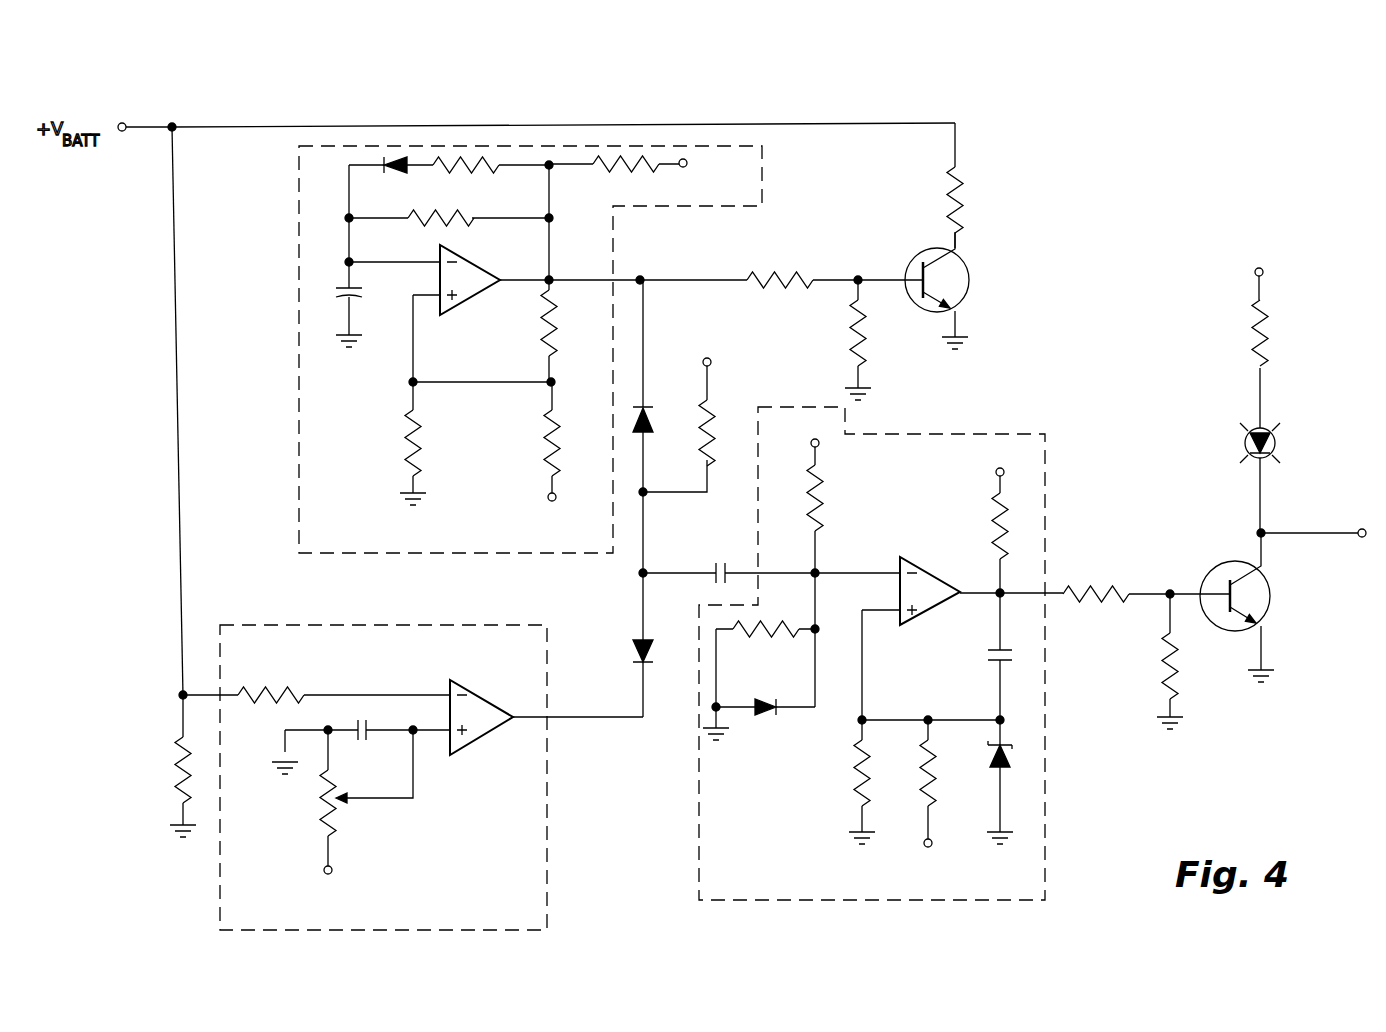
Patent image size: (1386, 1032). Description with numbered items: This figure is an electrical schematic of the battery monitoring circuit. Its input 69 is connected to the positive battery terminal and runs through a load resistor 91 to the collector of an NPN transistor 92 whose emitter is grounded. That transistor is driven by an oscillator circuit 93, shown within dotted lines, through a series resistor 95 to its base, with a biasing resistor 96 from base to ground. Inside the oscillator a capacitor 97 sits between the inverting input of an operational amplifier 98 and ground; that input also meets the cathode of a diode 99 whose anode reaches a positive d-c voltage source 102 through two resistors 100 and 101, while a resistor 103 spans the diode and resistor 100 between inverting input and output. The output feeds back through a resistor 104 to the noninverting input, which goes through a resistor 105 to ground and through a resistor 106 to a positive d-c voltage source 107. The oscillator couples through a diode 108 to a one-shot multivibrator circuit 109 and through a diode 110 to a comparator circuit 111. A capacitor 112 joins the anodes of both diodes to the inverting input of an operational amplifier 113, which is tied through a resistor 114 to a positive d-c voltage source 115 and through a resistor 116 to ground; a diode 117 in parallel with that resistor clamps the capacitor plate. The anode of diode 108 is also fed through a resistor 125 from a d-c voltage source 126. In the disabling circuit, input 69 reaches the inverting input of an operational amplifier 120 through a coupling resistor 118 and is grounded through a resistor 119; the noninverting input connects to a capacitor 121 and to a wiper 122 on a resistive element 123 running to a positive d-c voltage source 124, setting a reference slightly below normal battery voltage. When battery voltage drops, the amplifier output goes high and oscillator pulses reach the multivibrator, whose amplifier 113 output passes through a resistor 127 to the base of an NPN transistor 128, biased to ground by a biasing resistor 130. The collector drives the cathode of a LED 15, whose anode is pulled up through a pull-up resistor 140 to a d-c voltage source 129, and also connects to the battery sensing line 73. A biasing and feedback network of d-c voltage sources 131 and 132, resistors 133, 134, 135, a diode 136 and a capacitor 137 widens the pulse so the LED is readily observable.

The input 69 is at (125, 120).
The load resistor 91 is at (965, 200).
The NPN transistor 92 is at (965, 300).
The oscillator circuit 93 is at (762, 172).
The series resistor 95 is at (775, 272).
The biasing resistor 96 is at (865, 345).
The capacitor 97 is at (340, 283).
The operational amplifier 98 is at (470, 298).
The diode 99 is at (395, 172).
The resistor 100 is at (480, 172).
The resistor 101 is at (622, 178).
The positive d-c voltage source 102 is at (680, 168).
The resistor 103 is at (468, 224).
The resistor 104 is at (545, 333).
The resistor 105 is at (420, 440).
The resistor 106 is at (545, 455).
The positive d-c voltage source 107 is at (545, 497).
The diode 108 is at (648, 430).
The one-shot multivibrator circuit 109 is at (970, 430).
The diode 110 is at (635, 640).
The comparator circuit 111 is at (482, 619).
The capacitor 112 is at (716, 565).
The operational amplifier 113 is at (935, 575).
The resistor 114 is at (822, 500).
The positive d-c voltage source 115 is at (820, 445).
The resistor 116 is at (772, 636).
The diode 117 is at (768, 715).
The coupling resistor 118 is at (268, 690).
The resistor 119 is at (178, 772).
The operational amplifier 120 is at (490, 690).
The capacitor 121 is at (370, 722).
The wiper 122 is at (395, 800).
The resistive element 123 is at (320, 810).
The positive d-c voltage source 124 is at (333, 870).
The resistor 125 is at (710, 400).
The d-c voltage source 126 is at (712, 362).
The resistor 127 is at (1095, 585).
The NPN transistor 128 is at (1265, 616).
The d-c voltage source 129 is at (1255, 274).
The biasing resistor 130 is at (1178, 680).
The d-c voltage source 131 is at (995, 475).
The d-c voltage source 132 is at (933, 848).
The resistor 133 is at (995, 525).
The resistor 134 is at (935, 785).
The resistor 135 is at (856, 785).
The diode 136 is at (1012, 757).
The capacitor 137 is at (995, 650).
The pull-up resistor 140 is at (1255, 338).
The LED 15 is at (1245, 443).
The battery sensing line 73 is at (1358, 528).